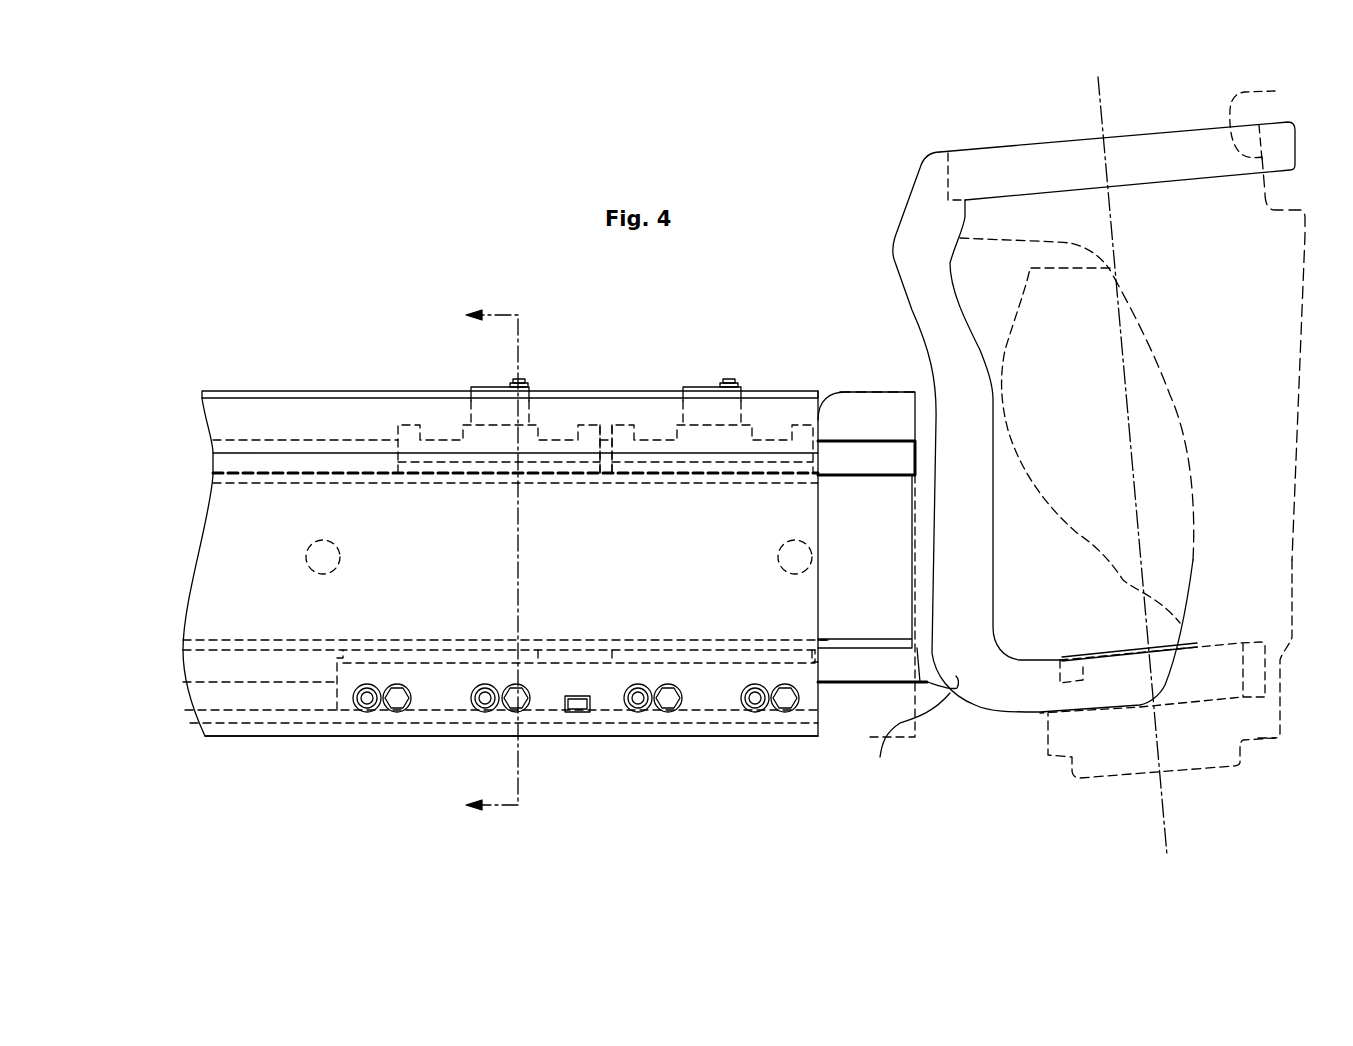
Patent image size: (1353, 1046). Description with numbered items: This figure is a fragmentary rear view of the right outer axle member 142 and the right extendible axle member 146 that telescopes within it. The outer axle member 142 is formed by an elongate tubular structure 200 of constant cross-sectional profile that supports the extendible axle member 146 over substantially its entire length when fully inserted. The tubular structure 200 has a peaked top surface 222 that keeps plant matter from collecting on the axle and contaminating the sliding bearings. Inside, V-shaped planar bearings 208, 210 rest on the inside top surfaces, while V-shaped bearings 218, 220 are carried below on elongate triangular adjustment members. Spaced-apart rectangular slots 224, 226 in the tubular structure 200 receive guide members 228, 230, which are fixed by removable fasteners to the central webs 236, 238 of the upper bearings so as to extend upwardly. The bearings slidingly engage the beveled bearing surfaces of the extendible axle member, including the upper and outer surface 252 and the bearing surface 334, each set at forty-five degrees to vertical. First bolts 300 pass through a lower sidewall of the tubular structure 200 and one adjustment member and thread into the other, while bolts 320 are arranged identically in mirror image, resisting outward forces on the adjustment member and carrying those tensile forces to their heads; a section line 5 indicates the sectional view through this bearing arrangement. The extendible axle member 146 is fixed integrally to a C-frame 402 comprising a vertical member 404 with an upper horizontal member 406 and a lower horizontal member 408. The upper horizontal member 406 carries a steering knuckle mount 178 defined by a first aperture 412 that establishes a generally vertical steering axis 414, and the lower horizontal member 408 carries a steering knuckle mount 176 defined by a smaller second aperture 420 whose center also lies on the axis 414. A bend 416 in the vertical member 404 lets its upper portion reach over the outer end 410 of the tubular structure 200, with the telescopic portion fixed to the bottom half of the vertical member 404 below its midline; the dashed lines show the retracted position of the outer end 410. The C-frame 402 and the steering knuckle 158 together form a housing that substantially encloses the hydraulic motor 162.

The section line 5 is at (482, 564).
The right outer axle member 142 is at (395, 737).
The right extendible axle member 146 is at (903, 740).
The steering knuckle 158 is at (1258, 740).
The hydraulic motor 162 is at (1053, 513).
The steering knuckle mount 176 is at (1072, 693).
The steering knuckle mount 178 is at (990, 155).
The elongate tubular structure 200 is at (250, 397).
The V-shaped planar bearing 208 is at (630, 393).
The V-shaped planar bearing 210 is at (588, 392).
The V-shaped bearing 218 is at (803, 677).
The V-shaped bearing 220 is at (437, 680).
The peaked top surface 222 is at (296, 390).
The rectangular slot 224 is at (721, 333).
The rectangular slot 226 is at (486, 333).
The guide member 228 is at (695, 386).
The guide member 230 is at (483, 387).
The central web 236 is at (713, 403).
The central web 238 is at (483, 403).
The upper and outer bearing surface 252 is at (885, 457).
The first bolt 300 is at (397, 684).
The bolt 320 is at (367, 684).
The bearing surface 334 is at (882, 665).
The C-frame 402 is at (880, 210).
The vertical member 404 is at (970, 433).
The upper horizontal member 406 is at (1145, 112).
The lower horizontal member 408 is at (1068, 596).
The outer end 410 is at (907, 391).
The first aperture 412 is at (1271, 119).
The steering axis 414 is at (1098, 101).
The bend 416 is at (967, 338).
The second aperture 420 is at (1062, 682).